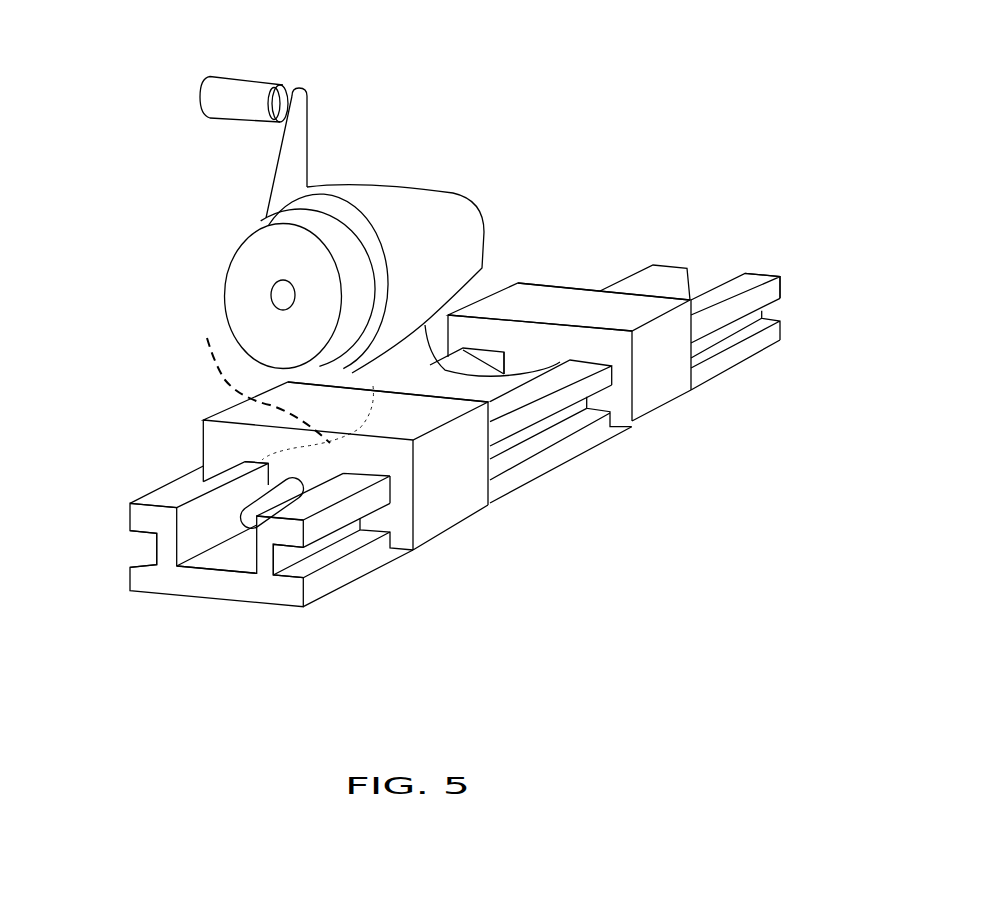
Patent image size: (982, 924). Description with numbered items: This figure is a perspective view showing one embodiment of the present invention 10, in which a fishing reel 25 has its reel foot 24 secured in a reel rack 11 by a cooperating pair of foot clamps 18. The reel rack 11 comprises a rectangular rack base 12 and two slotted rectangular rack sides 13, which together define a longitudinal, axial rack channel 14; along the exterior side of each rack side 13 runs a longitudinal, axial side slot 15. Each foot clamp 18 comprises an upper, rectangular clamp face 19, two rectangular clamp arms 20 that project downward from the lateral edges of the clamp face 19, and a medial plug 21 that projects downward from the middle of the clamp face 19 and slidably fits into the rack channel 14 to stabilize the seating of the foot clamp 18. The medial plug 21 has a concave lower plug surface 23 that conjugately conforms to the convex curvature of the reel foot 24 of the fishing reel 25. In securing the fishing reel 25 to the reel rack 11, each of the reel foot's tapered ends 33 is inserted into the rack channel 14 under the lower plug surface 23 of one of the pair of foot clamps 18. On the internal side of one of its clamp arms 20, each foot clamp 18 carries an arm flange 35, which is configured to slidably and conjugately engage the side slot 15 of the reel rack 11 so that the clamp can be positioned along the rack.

The present invention 10 is at (722, 205).
The reel rack 11 is at (780, 273).
The rack base 12 is at (280, 593).
The rack sides 13 is at (116, 505).
The rack channel 14 is at (233, 551).
The side slot 15 is at (137, 547).
The foot clamp 18 is at (196, 410).
The clamp face 19 is at (232, 410).
The clamp arms 20 is at (465, 490).
The medial plug 21 is at (555, 345).
The lower plug surface 23 is at (258, 512).
The reel foot 24 is at (512, 380).
The fishing reel 25 is at (397, 158).
The tapered ends 33 is at (250, 518).
The arm flange 35 is at (383, 517).